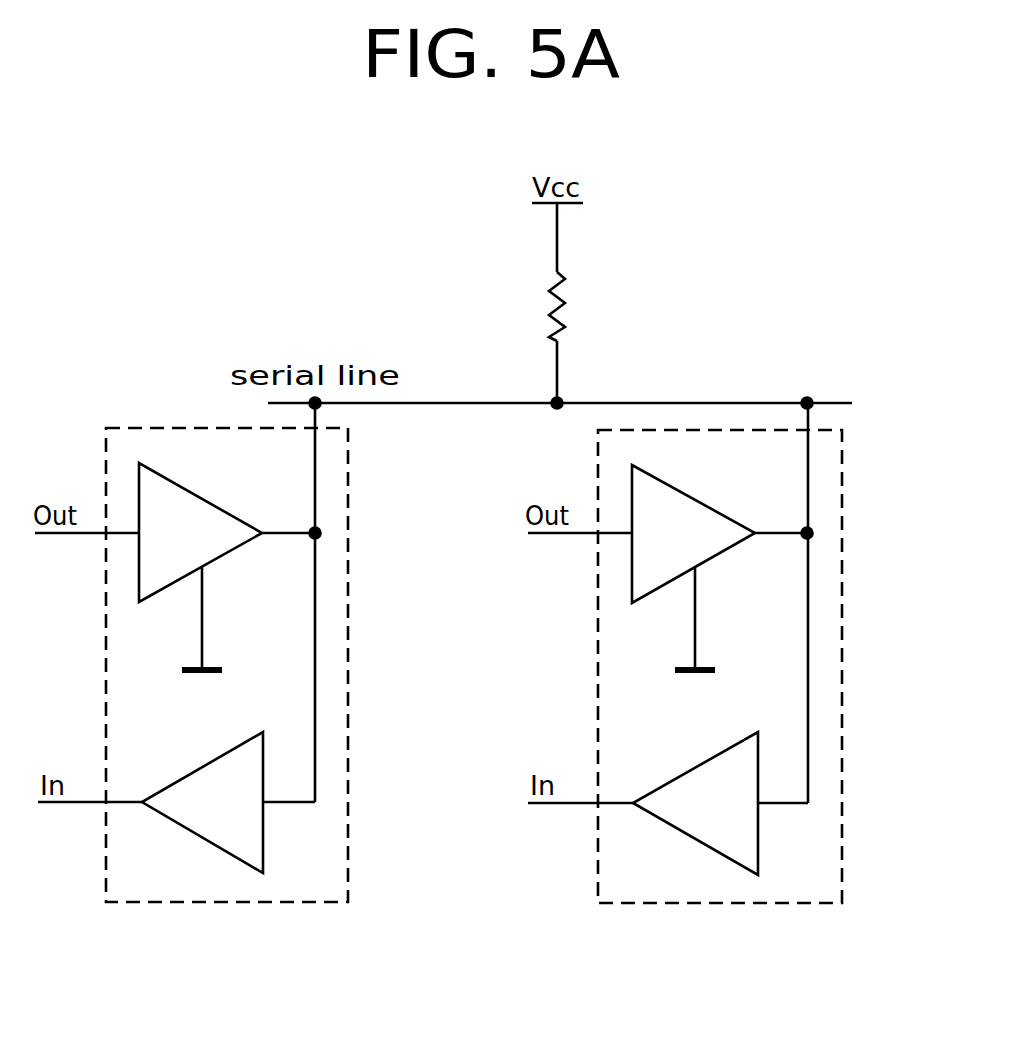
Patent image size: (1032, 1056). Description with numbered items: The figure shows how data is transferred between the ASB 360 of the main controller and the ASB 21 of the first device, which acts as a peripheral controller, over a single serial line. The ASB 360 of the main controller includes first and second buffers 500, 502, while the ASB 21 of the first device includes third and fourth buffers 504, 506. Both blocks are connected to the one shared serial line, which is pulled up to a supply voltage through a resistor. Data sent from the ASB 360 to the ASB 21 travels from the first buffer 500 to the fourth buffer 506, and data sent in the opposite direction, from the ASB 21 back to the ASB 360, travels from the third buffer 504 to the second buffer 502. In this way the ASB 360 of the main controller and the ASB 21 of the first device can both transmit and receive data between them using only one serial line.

The ASB of the main controller 360 is at (349, 663).
The ASB of the first device 21 is at (843, 663).
The first buffer 500 is at (201, 498).
The second buffer 502 is at (200, 768).
The third buffer 504 is at (695, 500).
The fourth buffer 506 is at (692, 770).